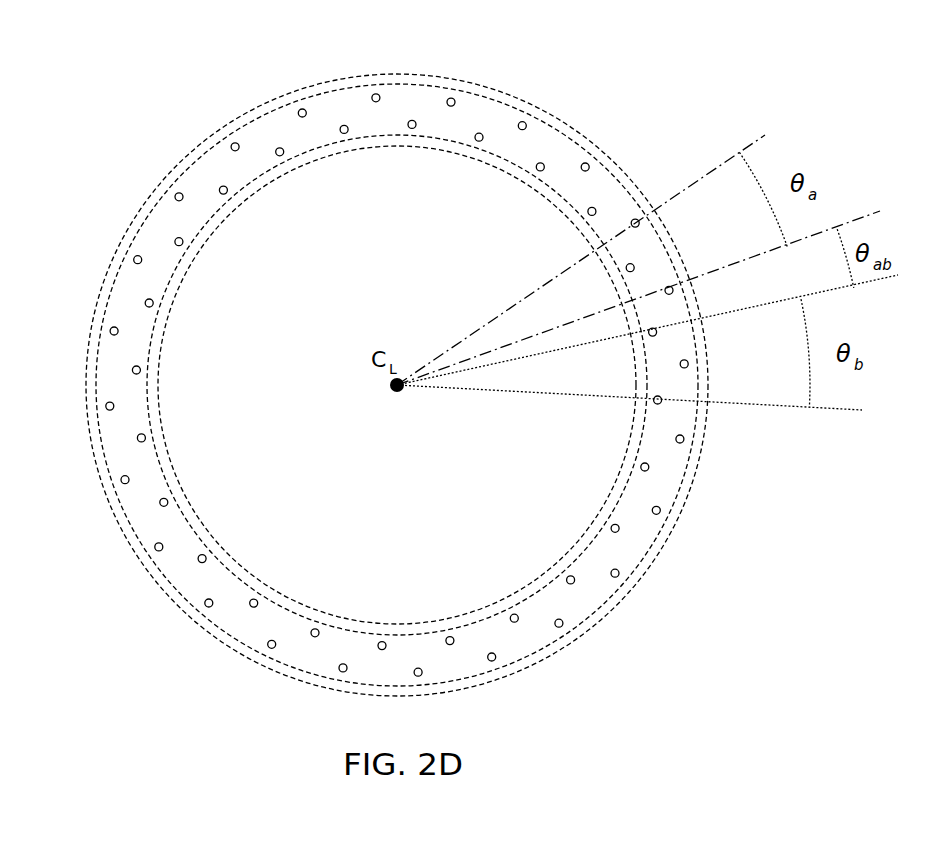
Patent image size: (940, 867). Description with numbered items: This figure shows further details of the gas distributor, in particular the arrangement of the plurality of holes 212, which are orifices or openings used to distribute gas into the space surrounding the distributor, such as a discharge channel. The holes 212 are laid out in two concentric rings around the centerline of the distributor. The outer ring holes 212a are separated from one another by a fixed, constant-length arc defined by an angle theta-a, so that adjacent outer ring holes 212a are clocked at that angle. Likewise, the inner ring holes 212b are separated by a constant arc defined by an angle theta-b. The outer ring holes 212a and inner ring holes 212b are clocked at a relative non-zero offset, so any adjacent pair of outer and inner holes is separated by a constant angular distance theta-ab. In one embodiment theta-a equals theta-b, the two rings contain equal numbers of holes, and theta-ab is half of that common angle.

The plurality of holes 212 is at (514, 360).
The outer ring holes 212a is at (671, 280).
The inner ring holes 212b is at (656, 339).